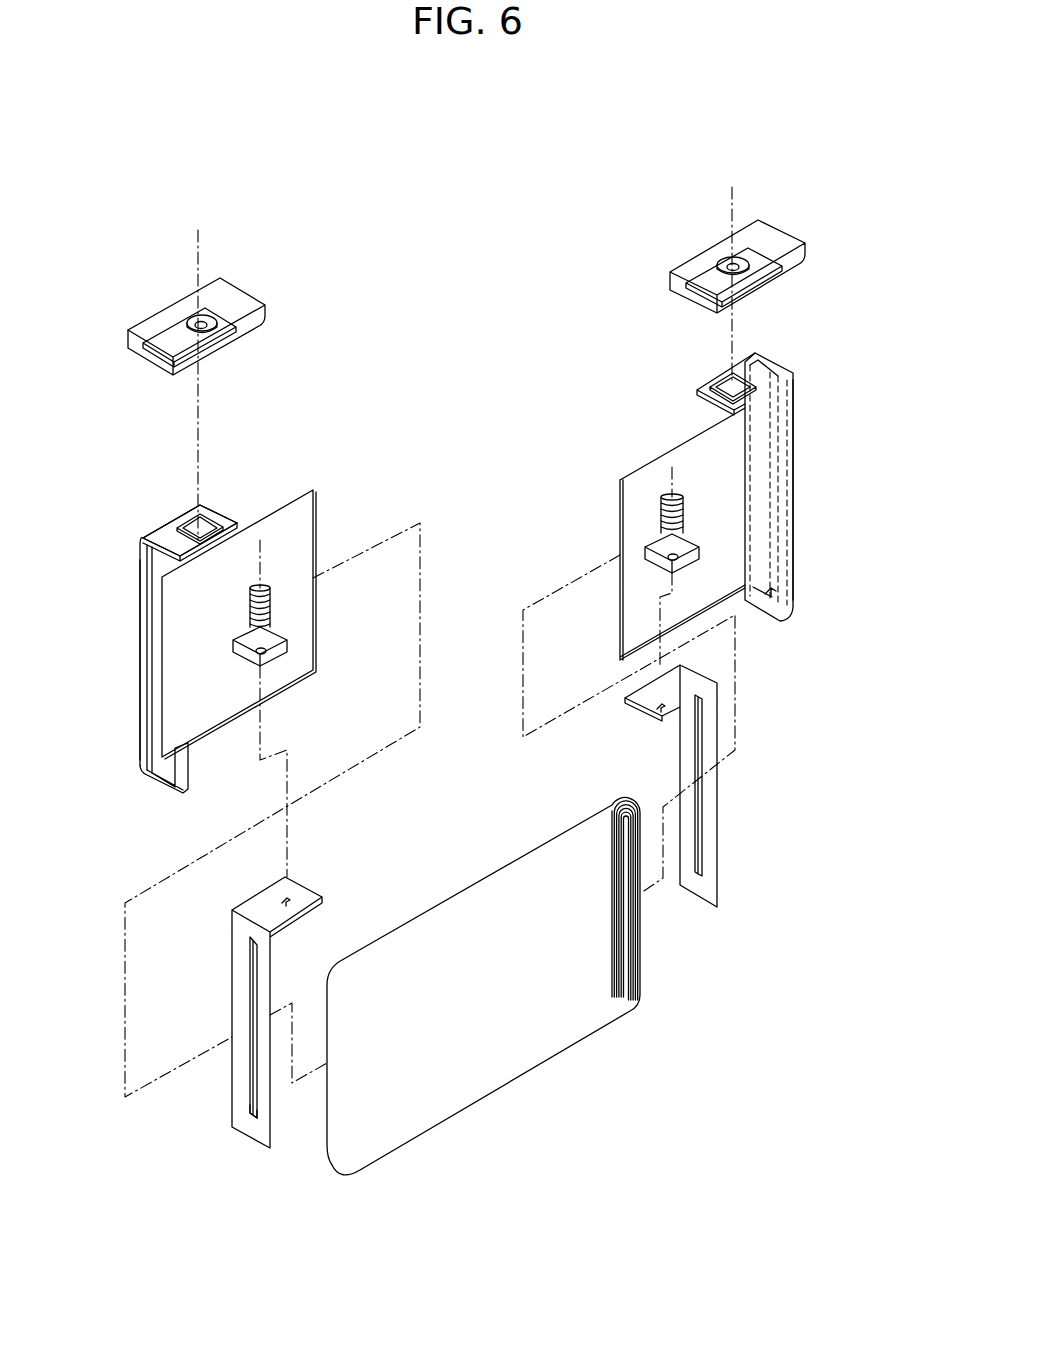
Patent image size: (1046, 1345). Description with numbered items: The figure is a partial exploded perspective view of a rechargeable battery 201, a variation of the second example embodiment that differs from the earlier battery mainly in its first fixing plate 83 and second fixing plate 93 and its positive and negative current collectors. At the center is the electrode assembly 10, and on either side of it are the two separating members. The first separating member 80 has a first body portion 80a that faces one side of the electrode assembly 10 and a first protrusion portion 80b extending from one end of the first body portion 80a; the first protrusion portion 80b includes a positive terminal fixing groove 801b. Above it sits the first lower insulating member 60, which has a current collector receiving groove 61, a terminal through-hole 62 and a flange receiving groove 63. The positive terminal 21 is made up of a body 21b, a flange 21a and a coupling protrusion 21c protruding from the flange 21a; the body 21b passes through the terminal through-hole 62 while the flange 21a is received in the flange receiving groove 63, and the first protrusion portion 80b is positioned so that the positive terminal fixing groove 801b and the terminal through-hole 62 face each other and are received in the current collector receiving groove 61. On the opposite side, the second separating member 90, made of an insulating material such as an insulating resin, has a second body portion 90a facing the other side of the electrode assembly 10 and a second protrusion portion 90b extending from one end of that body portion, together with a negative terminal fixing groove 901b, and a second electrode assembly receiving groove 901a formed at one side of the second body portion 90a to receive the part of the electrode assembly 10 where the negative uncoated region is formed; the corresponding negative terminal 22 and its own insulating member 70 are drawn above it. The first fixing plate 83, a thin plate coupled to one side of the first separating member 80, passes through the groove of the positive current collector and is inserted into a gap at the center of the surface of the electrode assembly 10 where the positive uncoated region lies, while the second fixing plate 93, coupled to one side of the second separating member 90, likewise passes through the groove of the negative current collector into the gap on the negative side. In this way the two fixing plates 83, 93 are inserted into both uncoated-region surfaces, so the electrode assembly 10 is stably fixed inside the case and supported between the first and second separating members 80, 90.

The rechargeable battery 201 is at (462, 133).
The electrode assembly 10 is at (649, 962).
The positive terminal 21 is at (302, 687).
The flange 21a is at (282, 642).
The body 21b is at (270, 600).
The coupling protrusion 21c is at (265, 662).
The second electrode terminal 22 is at (648, 510).
The first lower insulating member 60 is at (122, 308).
The current collector receiving groove 61 is at (160, 353).
The terminal through-hole 62 is at (212, 332).
The flange receiving groove 63 is at (205, 333).
The second insulation member 70 is at (788, 220).
The first separating member 80 is at (124, 557).
The first body portion 80a is at (140, 612).
The first protrusion portion 80b is at (162, 529).
The positive terminal fixing groove 801b is at (193, 522).
The first fixing plate 83 is at (325, 515).
The second separating member 90 is at (805, 390).
The second body portion 90a is at (788, 473).
The second protrusion portion 90b is at (710, 380).
The second electrode assembly receiving groove 901a is at (766, 600).
The negative terminal fixing groove 901b is at (728, 393).
The second fixing plate 93 is at (609, 636).